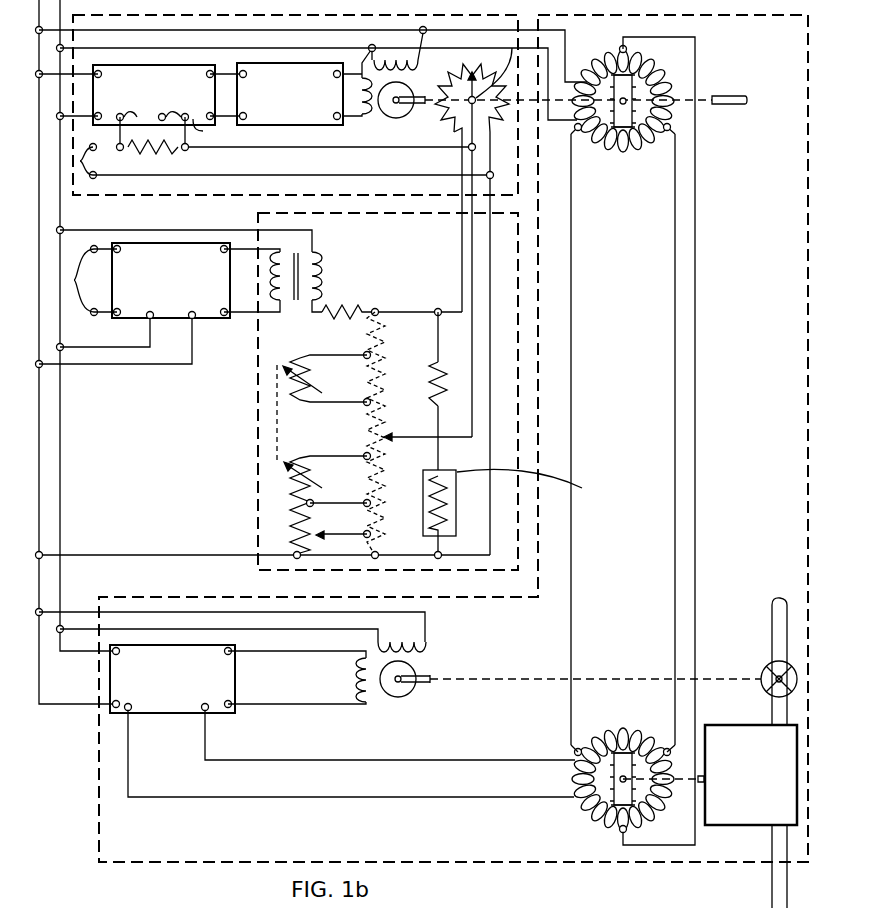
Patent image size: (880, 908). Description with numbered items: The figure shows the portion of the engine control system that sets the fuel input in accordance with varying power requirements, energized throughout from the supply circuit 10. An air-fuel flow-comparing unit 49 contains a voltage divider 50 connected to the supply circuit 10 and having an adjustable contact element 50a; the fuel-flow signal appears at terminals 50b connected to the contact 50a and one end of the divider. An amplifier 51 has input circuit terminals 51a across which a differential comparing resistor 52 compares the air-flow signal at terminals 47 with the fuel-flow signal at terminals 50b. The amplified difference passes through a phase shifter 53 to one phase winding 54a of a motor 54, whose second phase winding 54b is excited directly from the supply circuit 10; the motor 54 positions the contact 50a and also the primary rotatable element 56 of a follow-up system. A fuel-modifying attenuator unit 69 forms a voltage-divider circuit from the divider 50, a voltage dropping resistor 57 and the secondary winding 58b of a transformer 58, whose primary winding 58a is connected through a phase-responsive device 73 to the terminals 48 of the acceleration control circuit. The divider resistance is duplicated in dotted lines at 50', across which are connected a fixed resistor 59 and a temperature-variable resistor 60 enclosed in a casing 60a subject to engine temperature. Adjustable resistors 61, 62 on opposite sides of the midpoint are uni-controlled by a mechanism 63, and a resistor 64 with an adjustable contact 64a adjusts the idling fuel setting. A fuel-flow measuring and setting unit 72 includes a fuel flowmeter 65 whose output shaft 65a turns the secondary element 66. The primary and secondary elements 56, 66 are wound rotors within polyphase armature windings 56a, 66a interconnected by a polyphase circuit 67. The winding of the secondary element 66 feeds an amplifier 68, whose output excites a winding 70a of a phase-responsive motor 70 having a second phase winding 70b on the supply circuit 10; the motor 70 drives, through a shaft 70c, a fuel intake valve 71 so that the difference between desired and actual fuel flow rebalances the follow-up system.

The supply circuit 10 is at (40, 425).
The terminals 47 is at (264, 122).
The terminals 48 is at (151, 280).
The air-fuel flow-comparing unit 49 is at (259, 172).
The voltage divider 50 is at (469, 309).
The adjustable contact element 50a is at (493, 64).
The terminals 50b is at (490, 174).
The duplicated voltage divider resistance 50' is at (418, 435).
The amplifier 51 is at (207, 130).
The input circuit terminals 51a is at (153, 113).
The differential comparing resistor 52 is at (170, 150).
The phase shifter 53 is at (310, 120).
The motor 54 is at (396, 118).
The phase winding 54a is at (370, 50).
The second phase winding 54b is at (417, 56).
The primary rotatable element 56 is at (614, 146).
The polyphase armature winding 56a is at (650, 68).
The voltage dropping resistor 57 is at (345, 310).
The transformer 58 is at (290, 243).
The primary winding 58a is at (283, 300).
The secondary winding 58b is at (324, 268).
The fixed resistor 59 is at (433, 401).
The temperature-variable resistor 60 is at (446, 495).
The casing 60a is at (446, 511).
The adjustable resistor 61 is at (314, 381).
The adjustable resistor 62 is at (314, 472).
The uni-control mechanism 63 is at (278, 425).
The resistor 64 is at (296, 531).
The adjustable contact 64a is at (330, 534).
The fuel flowmeter 65 is at (742, 732).
The output shaft 65a is at (700, 784).
The secondary element 66 is at (616, 790).
The polyphase armature winding 66a is at (576, 753).
The polyphase circuit 67 is at (695, 383).
The amplifier 68 is at (237, 694).
The fuel-modifying attenuator unit 69 is at (258, 406).
The phase-responsive motor 70 is at (401, 697).
The winding 70a is at (366, 689).
The second phase winding 70b is at (426, 647).
The shaft 70c is at (424, 677).
The fuel intake valve 71 is at (762, 677).
The fuel-flow measuring and setting unit 72 is at (482, 862).
The phase-responsive device 73 is at (210, 318).